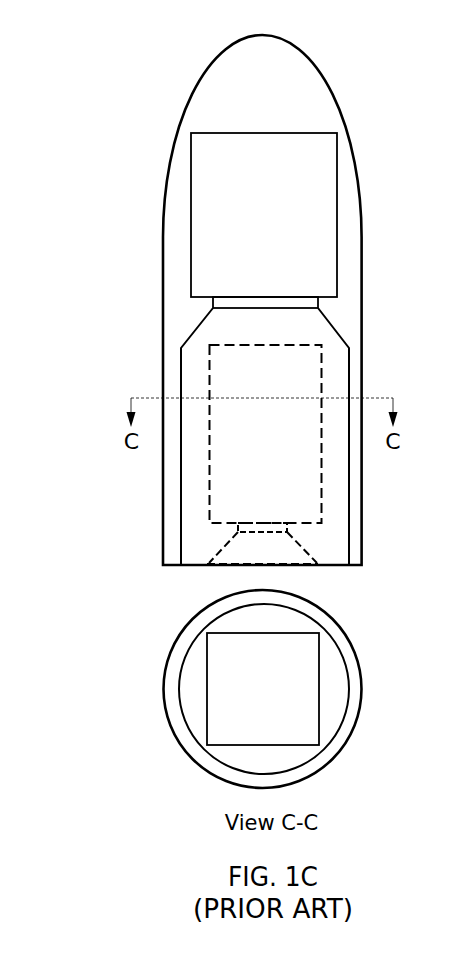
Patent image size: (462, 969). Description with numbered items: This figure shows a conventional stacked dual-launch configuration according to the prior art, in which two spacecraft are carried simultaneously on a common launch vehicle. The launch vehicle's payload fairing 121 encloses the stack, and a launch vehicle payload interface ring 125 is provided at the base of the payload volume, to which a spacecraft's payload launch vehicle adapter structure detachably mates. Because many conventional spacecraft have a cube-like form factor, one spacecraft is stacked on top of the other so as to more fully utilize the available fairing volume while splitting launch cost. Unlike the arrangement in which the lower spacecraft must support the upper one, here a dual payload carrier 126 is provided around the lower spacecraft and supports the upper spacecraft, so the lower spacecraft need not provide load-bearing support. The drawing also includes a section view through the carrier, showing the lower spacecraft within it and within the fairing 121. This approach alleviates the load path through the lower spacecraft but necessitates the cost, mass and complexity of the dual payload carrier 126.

The payload fairing 121 is at (330, 90).
The dual payload carrier 126 is at (350, 483).
The launch vehicle payload interface ring 125 is at (305, 548).